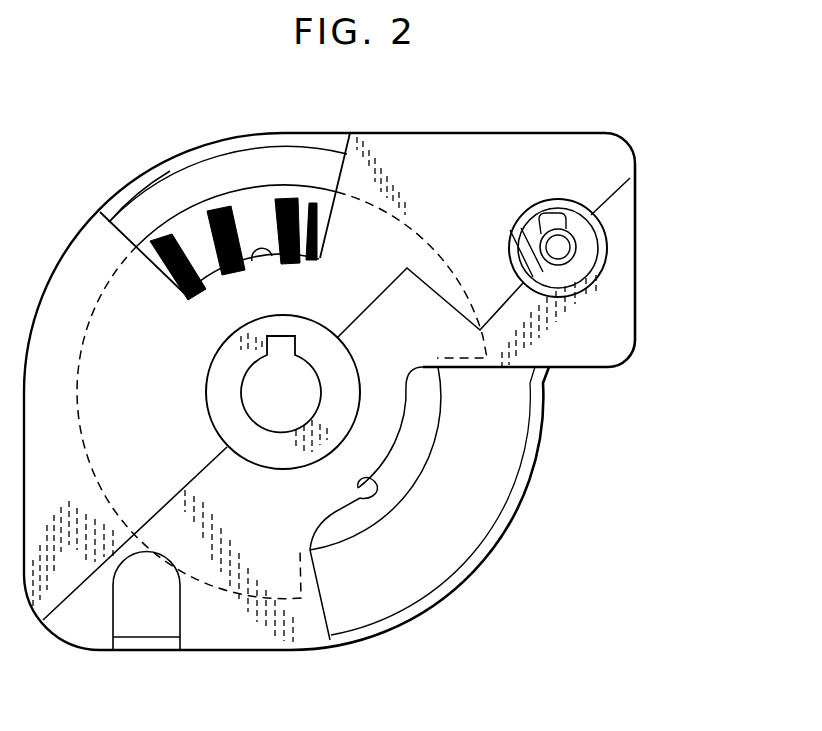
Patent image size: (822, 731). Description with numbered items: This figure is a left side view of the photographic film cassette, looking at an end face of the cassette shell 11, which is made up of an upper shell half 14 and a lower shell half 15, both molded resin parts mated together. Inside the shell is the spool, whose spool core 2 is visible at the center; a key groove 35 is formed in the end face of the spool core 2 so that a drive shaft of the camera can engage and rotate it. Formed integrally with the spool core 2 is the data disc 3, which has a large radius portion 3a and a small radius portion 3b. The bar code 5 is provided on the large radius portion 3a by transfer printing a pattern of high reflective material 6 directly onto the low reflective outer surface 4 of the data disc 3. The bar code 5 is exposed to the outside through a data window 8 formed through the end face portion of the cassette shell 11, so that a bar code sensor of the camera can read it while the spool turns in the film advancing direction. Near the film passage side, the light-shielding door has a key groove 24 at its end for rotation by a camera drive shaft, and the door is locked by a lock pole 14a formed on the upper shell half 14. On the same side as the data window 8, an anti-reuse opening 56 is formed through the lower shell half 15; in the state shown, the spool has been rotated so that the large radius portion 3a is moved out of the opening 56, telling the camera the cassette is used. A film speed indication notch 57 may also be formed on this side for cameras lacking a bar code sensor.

The spool core 2 is at (202, 349).
The data disc 3 is at (236, 166).
The large radius portion 3a is at (290, 186).
The small radius portion 3b is at (397, 503).
The low reflective outer surface 4 is at (192, 227).
The bar code 5 is at (148, 121).
The high reflective material 6 is at (130, 194).
The data window 8 is at (271, 263).
The cassette shell 11 is at (720, 136).
The upper shell half 14 is at (618, 152).
The lock pole 14a is at (516, 258).
The lower shell half 15 is at (620, 220).
The key groove 24 is at (557, 246).
The key groove 35 is at (283, 343).
The anti-reuse opening 56 is at (347, 495).
The film speed indication notch 57 is at (178, 613).